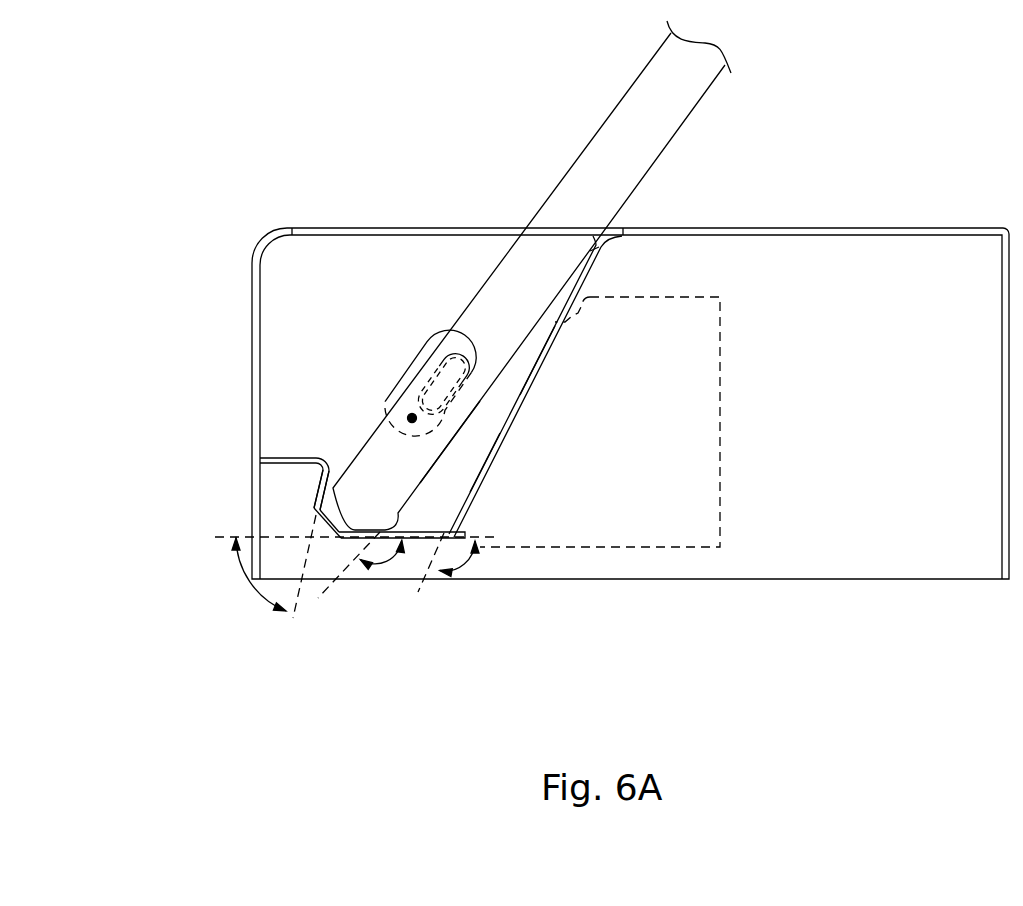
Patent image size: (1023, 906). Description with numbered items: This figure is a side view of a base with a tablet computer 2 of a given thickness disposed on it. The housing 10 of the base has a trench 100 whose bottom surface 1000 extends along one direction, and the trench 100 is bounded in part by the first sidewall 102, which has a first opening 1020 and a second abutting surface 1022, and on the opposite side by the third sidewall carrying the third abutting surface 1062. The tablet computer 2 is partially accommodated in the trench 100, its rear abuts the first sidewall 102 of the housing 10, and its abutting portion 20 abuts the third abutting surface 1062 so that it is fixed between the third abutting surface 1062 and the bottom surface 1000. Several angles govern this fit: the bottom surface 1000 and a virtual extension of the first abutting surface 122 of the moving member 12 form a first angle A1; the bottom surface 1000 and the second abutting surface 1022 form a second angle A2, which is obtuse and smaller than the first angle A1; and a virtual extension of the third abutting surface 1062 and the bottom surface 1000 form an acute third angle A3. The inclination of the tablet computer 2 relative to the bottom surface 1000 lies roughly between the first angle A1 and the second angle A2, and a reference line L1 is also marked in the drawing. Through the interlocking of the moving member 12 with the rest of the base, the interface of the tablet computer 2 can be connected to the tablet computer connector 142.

The tablet computer 2 is at (630, 108).
The housing 10 is at (880, 253).
The moving member 12 is at (672, 540).
The abutting portion 20 is at (333, 506).
The trench 100 is at (317, 554).
The first sidewall 102 is at (543, 358).
The first opening 1020 is at (508, 386).
The second abutting surface 1022 is at (493, 443).
The first abutting surface 122 is at (453, 440).
The tablet computer connector 142 is at (442, 373).
The bottom surface 1000 is at (422, 538).
The third abutting surface 1062 is at (332, 500).
The reference line L1 is at (410, 417).
The first angle A1 is at (383, 562).
The second angle A2 is at (462, 568).
The third angle A3 is at (266, 566).